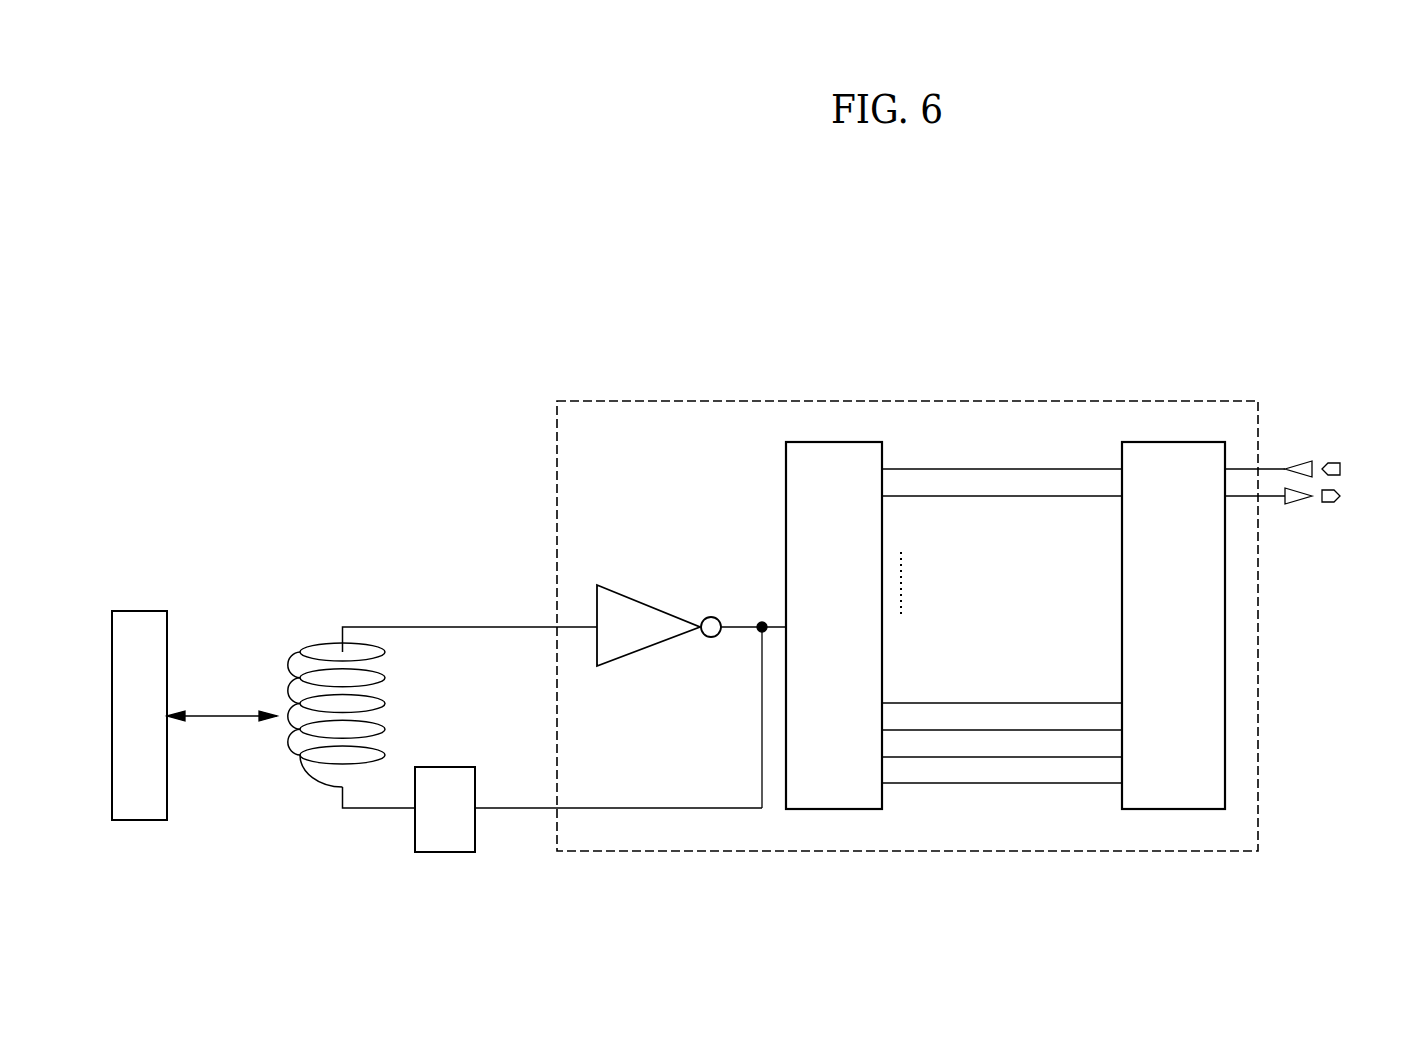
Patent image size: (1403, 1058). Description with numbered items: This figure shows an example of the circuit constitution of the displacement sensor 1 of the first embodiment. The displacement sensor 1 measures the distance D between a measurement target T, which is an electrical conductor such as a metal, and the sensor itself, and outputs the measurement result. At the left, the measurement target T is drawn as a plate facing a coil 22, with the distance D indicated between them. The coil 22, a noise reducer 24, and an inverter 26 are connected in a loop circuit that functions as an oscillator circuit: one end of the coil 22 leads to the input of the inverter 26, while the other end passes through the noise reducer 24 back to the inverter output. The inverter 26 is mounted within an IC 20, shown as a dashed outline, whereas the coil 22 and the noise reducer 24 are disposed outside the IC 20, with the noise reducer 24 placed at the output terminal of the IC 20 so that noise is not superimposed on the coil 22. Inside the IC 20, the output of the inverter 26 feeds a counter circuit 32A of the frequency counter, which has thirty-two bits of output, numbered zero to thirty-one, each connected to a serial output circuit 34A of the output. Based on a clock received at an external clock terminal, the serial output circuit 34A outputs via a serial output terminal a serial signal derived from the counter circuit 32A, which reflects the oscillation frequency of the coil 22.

The displacement sensor 1 is at (1260, 311).
The IC 20 is at (1066, 401).
The coil 22 is at (295, 655).
The noise reducer 24 is at (445, 767).
The inverter 26 is at (647, 602).
The counter circuit 32A is at (851, 442).
The serial output circuit 34A is at (1185, 442).
The measurement target T is at (137, 611).
The distance D is at (222, 729).